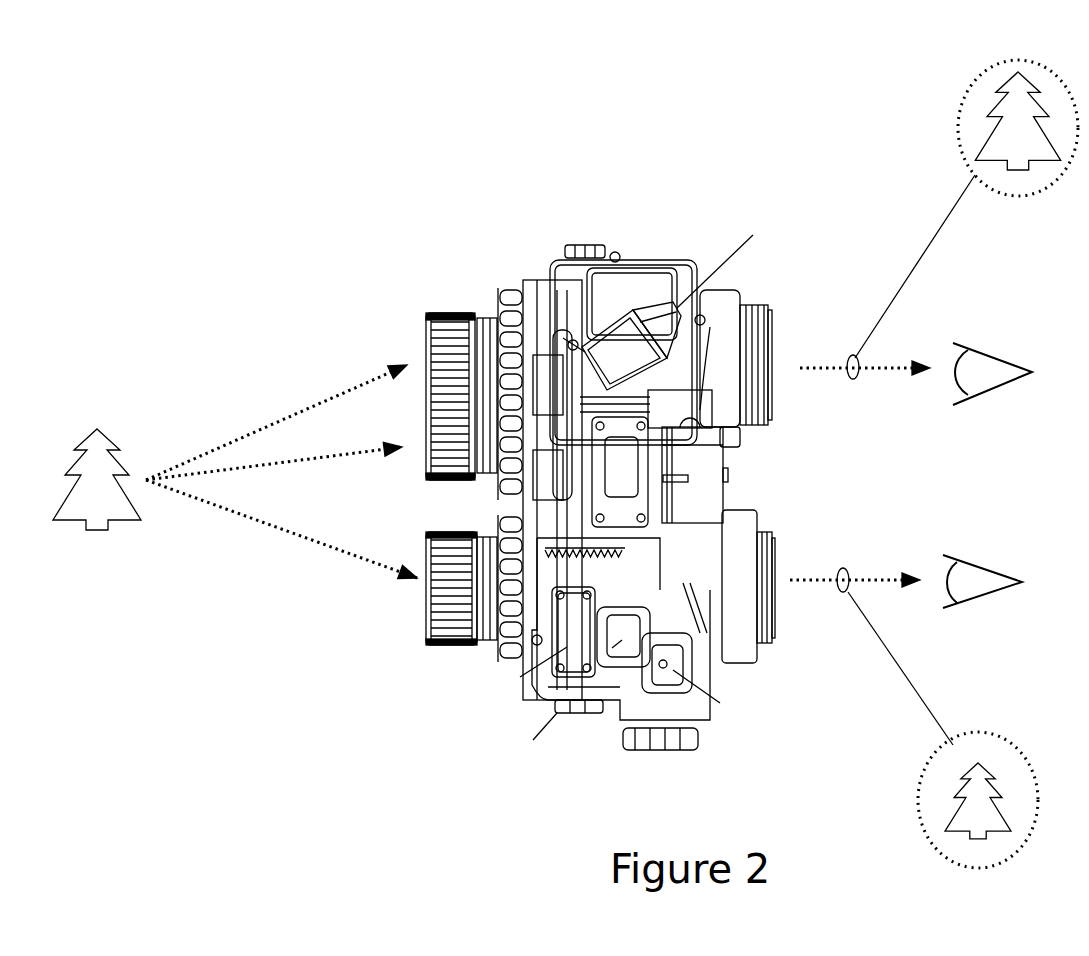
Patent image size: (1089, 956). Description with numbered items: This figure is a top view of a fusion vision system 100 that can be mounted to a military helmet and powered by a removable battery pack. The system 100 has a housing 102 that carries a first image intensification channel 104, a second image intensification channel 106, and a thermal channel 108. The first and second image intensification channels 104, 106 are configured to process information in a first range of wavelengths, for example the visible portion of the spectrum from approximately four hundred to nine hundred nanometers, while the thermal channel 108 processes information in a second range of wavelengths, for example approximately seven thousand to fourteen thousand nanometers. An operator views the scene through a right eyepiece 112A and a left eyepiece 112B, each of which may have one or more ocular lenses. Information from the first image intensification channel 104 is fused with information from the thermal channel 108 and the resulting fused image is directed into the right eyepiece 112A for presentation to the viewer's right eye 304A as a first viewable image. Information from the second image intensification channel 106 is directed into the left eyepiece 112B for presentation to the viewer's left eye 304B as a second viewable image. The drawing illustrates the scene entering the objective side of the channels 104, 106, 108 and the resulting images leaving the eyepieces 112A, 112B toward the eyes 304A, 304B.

The fusion vision system 100 is at (520, 228).
The housing 102 is at (648, 260).
The first image intensification channel 104 is at (418, 310).
The second image intensification channel 106 is at (427, 585).
The thermal channel 108 is at (428, 478).
The right eyepiece 112A is at (767, 308).
The left eyepiece 112B is at (771, 628).
The right eye 304A is at (1015, 378).
The left eye 304B is at (1005, 591).